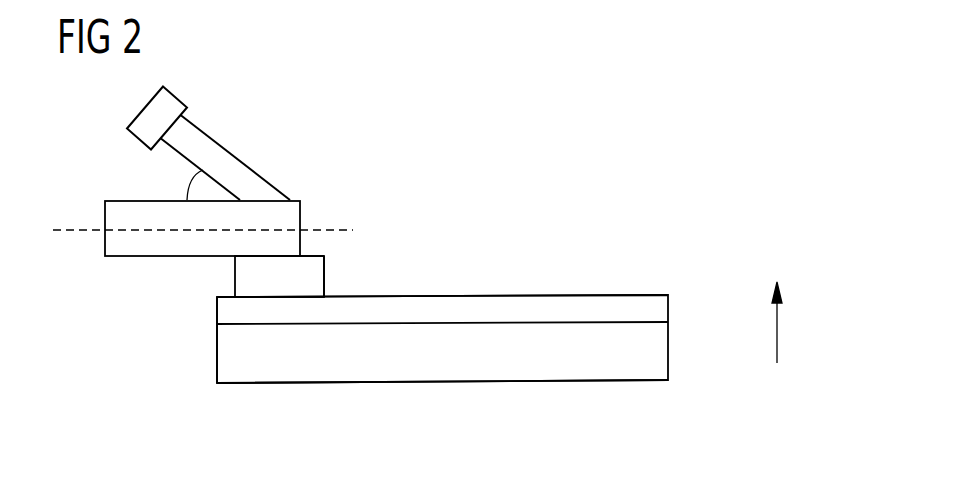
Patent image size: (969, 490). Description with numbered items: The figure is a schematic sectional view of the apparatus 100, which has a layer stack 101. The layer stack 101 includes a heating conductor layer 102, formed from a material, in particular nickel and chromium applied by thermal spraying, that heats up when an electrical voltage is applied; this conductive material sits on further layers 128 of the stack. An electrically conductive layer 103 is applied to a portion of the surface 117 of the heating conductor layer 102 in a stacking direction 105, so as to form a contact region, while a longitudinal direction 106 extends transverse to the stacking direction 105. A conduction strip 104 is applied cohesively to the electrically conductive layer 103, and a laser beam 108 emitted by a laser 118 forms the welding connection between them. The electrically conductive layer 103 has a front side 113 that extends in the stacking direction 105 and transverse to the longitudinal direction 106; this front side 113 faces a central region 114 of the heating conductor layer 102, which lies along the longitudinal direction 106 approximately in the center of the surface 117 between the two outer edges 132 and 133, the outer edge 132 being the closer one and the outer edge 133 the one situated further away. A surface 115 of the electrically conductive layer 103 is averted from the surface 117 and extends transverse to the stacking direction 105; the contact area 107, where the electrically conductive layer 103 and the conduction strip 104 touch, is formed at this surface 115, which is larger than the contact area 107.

The apparatus 100 is at (456, 329).
The layer stack 101 is at (670, 318).
The heating conductor layer 102 is at (626, 304).
The electrically conductive layer 103 is at (245, 278).
The conduction strip 104 is at (120, 240).
The stacking direction 105 is at (778, 330).
The longitudinal direction 106 is at (73, 229).
The contact area 107 is at (262, 259).
The laser beam 108 is at (243, 176).
The front side 113 is at (326, 270).
The central region 114 is at (438, 383).
The surface of the electrically conductive layer 115 is at (318, 256).
The surface of the heating conductor layer 117 is at (512, 297).
The laser 118 is at (168, 104).
The further layers 128 is at (617, 367).
The outer edge 132 is at (216, 355).
The outer edge 133 is at (669, 302).